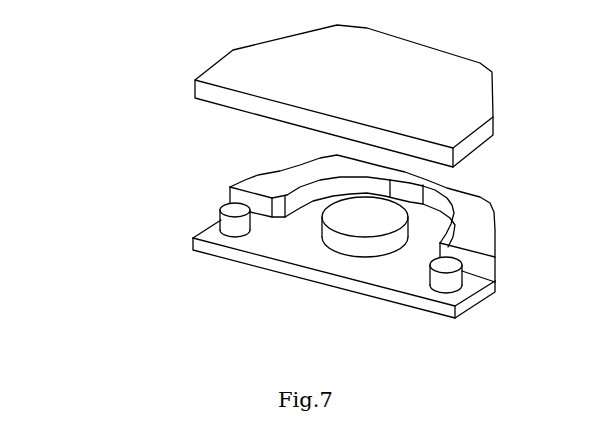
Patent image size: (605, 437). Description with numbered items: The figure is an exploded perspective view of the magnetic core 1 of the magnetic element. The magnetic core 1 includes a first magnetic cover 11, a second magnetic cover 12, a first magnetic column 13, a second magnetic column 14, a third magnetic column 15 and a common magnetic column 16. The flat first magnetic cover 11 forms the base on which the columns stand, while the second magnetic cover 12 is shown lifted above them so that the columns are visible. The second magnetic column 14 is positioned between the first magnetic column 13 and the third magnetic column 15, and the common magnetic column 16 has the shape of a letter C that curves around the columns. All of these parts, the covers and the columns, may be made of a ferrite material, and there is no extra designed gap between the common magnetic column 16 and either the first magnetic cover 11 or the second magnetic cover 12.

The magnetic core 1 is at (102, 59).
The first magnetic cover 11 is at (260, 235).
The second magnetic cover 12 is at (410, 60).
The first magnetic column 13 is at (230, 216).
The second magnetic column 14 is at (348, 247).
The third magnetic column 15 is at (453, 282).
The common magnetic column 16 is at (477, 222).